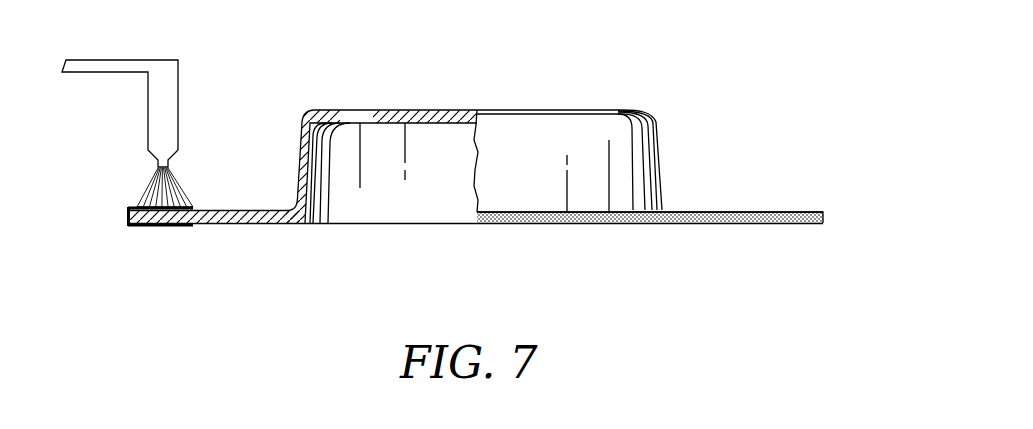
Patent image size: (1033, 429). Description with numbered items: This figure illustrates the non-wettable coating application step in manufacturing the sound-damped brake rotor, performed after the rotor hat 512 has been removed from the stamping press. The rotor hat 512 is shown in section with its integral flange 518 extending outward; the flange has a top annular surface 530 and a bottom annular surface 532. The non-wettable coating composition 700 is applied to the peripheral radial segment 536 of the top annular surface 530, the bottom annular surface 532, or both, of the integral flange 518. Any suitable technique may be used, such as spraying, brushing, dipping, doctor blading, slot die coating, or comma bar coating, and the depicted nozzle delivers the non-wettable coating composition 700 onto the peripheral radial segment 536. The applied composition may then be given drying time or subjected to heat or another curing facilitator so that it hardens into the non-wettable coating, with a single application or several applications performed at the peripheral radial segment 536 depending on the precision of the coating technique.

The rotor hat 512 is at (628, 108).
The integral flange 518 is at (725, 215).
The top annular surface 530 is at (783, 212).
The bottom annular surface 532 is at (758, 225).
The peripheral radial segment 536 is at (162, 236).
The non-wettable coating composition 700 is at (135, 188).